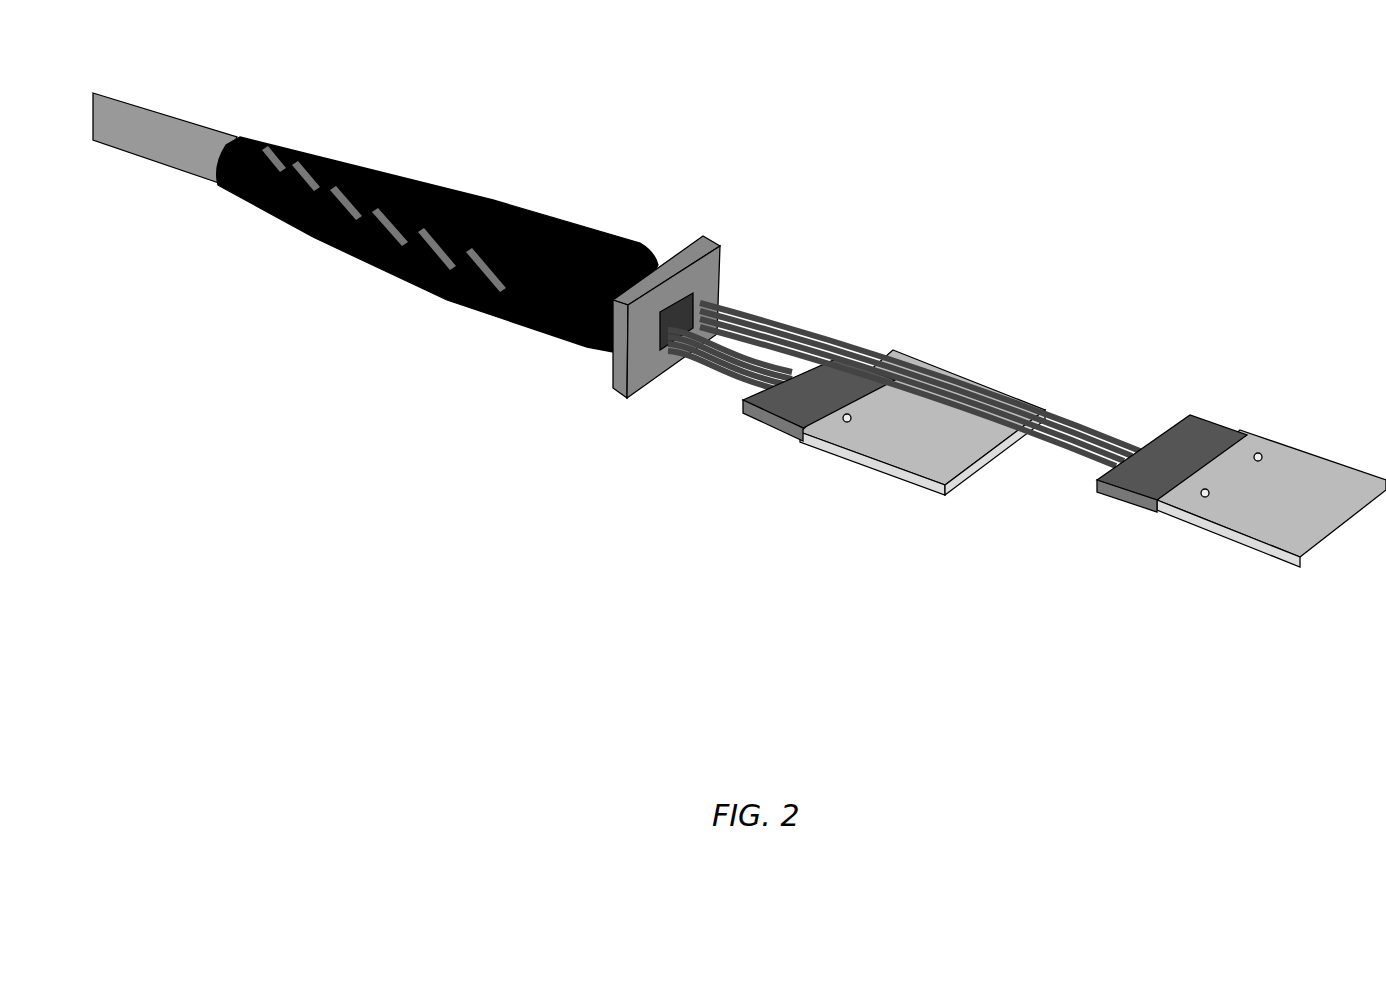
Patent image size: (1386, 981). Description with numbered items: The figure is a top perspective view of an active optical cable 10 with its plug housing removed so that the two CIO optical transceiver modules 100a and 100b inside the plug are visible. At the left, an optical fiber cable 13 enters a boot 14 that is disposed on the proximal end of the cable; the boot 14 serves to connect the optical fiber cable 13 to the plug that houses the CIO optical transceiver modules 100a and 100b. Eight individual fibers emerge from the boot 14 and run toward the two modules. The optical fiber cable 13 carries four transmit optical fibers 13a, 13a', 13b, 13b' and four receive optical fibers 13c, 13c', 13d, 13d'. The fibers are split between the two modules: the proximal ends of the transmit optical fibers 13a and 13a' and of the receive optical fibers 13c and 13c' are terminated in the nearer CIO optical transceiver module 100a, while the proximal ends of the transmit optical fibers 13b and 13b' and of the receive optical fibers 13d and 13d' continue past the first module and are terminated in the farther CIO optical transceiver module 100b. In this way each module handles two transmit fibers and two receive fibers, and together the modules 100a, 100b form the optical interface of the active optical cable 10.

The active optical cable 10 is at (1160, 145).
The optical fiber cable 13 is at (152, 120).
The boot 14 is at (478, 208).
The transmit optical fiber 13a is at (692, 387).
The transmit optical fiber 13a' is at (716, 393).
The transmit optical fiber 13b is at (912, 358).
The transmit optical fiber 13b' is at (908, 371).
The receive optical fiber 13c is at (730, 399).
The receive optical fiber 13c' is at (730, 375).
The receive optical fiber 13d is at (916, 339).
The receive optical fiber 13d' is at (920, 328).
The CIO optical transceiver module 100a is at (812, 428).
The CIO optical transceiver module 100b is at (1167, 512).